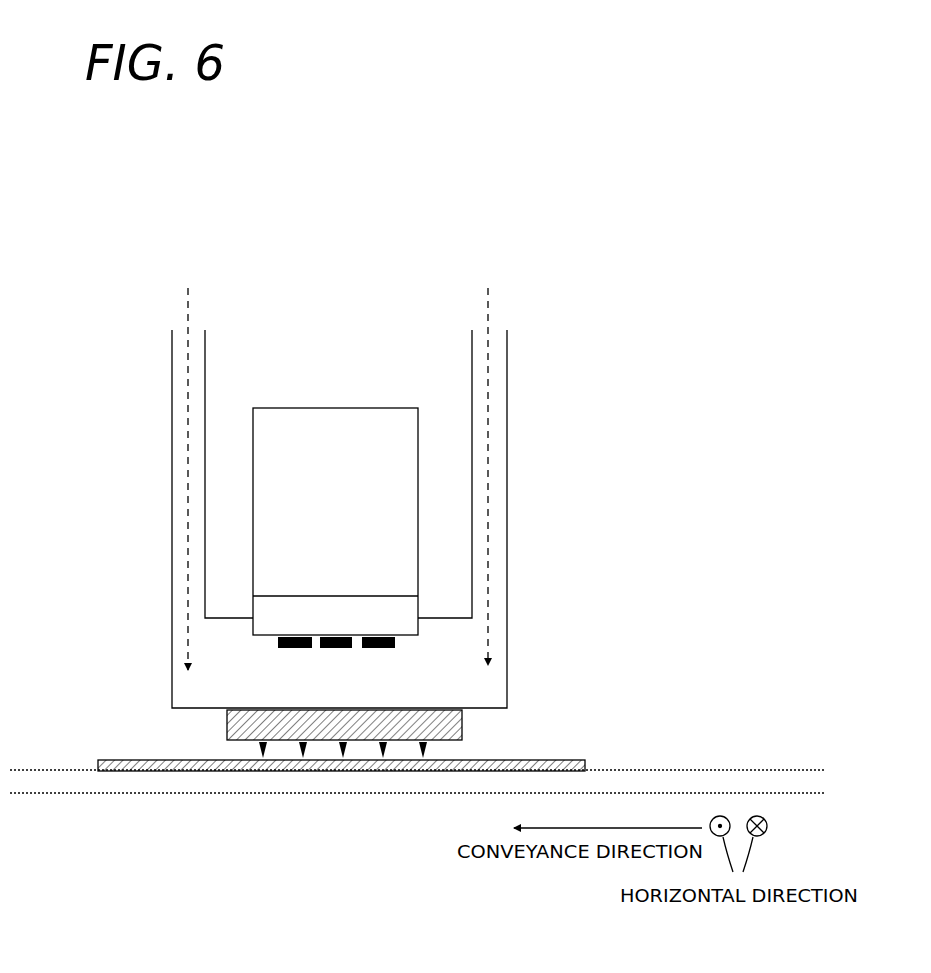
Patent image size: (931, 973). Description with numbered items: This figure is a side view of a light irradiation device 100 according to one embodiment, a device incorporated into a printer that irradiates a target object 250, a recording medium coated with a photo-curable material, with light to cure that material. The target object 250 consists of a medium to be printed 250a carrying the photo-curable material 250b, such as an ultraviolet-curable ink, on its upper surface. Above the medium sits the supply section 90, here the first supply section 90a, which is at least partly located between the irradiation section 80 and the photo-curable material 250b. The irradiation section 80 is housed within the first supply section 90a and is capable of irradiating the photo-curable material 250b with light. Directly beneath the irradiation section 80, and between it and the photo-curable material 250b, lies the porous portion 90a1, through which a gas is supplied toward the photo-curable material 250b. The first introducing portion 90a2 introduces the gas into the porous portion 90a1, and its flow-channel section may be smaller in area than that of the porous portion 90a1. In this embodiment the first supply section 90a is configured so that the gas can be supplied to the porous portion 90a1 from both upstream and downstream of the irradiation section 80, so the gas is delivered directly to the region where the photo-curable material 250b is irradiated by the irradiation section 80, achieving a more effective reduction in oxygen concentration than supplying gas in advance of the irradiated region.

The light irradiation device 100 is at (668, 206).
The supply section 90 is at (458, 507).
The first supply section 90a is at (458, 507).
The porous portion 90a1 is at (427, 703).
The first introducing portion 90a2 is at (497, 518).
The irradiation section 80 is at (283, 610).
The target object 250 is at (417, 731).
The medium to be printed 250a is at (625, 785).
The photo-curable material 250b is at (582, 762).